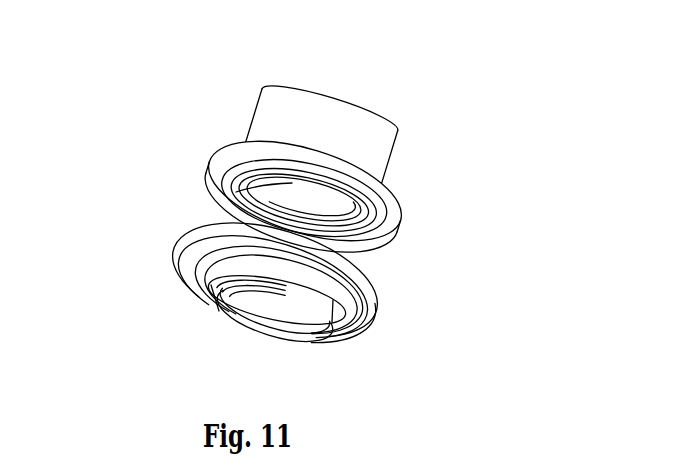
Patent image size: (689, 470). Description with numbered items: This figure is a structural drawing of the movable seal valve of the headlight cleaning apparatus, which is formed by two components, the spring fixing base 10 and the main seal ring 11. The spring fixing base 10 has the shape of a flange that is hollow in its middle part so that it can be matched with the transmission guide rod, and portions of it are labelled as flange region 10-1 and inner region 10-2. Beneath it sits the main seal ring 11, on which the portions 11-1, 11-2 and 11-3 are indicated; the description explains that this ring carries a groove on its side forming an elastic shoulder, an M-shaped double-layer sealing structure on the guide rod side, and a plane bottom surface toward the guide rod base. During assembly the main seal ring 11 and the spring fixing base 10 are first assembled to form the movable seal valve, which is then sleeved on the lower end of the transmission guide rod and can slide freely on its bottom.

The spring fixing base 10 is at (307, 117).
The flange of first member 10-1 is at (395, 188).
The inner groove of first member 10-2 is at (246, 178).
The main seal ring 11 is at (333, 262).
The flange portion of second member 11-1 is at (374, 308).
The sleeve portion of second member 11-2 is at (330, 328).
The inner groove of second member 11-3 is at (224, 292).